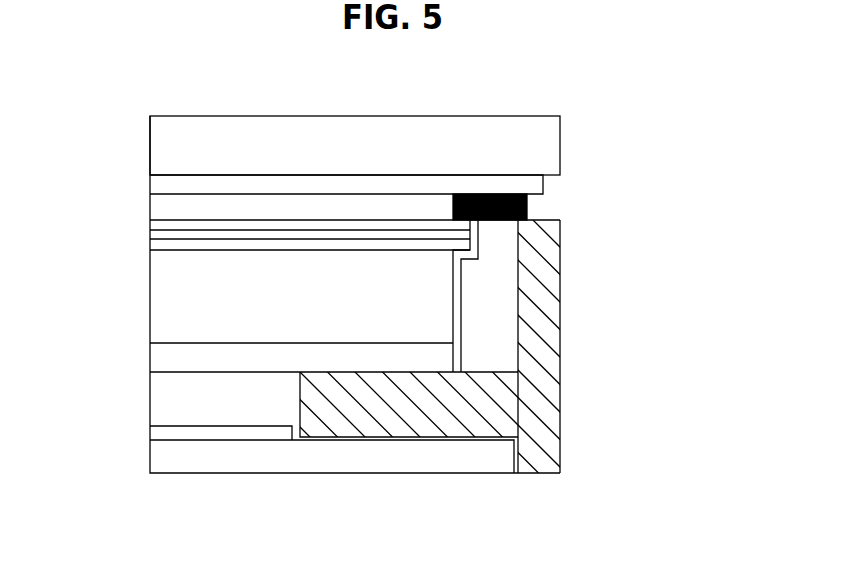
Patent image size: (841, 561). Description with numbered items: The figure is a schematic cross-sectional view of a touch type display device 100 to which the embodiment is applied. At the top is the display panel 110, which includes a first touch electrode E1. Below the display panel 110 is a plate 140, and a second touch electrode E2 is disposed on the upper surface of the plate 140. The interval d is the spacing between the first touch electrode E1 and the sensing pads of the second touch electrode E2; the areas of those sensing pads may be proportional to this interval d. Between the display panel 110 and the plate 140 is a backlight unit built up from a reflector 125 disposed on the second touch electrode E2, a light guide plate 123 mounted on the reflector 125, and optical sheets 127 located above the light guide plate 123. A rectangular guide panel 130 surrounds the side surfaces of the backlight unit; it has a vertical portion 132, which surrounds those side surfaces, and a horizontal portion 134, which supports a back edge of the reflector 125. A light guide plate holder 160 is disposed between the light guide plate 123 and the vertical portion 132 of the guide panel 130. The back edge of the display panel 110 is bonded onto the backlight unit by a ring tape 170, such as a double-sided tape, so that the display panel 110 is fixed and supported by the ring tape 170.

The touch type display device 100 is at (365, 65).
The display panel 110 is at (533, 146).
The first touch electrode E1 is at (530, 186).
The ring tape 170 is at (527, 205).
The optical sheets 127 is at (190, 251).
The light guide plate holder 160 is at (502, 297).
The light guide plate 123 is at (157, 299).
The reflector 125 is at (157, 357).
The guide panel 130 is at (439, 346).
The vertical portion 132 is at (538, 345).
The horizontal portion 134 is at (475, 408).
The second touch electrode E2 is at (149, 432).
The plate 140 is at (317, 473).
The interval d is at (247, 426).